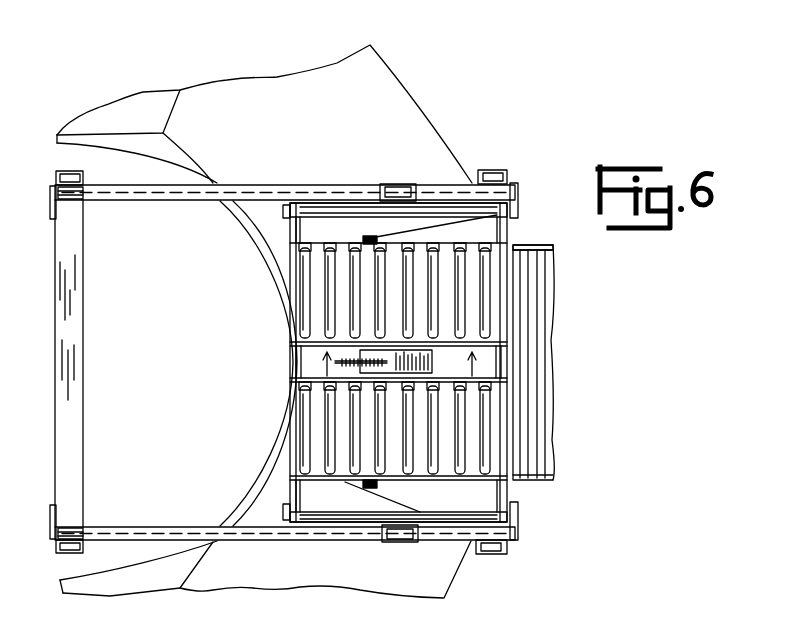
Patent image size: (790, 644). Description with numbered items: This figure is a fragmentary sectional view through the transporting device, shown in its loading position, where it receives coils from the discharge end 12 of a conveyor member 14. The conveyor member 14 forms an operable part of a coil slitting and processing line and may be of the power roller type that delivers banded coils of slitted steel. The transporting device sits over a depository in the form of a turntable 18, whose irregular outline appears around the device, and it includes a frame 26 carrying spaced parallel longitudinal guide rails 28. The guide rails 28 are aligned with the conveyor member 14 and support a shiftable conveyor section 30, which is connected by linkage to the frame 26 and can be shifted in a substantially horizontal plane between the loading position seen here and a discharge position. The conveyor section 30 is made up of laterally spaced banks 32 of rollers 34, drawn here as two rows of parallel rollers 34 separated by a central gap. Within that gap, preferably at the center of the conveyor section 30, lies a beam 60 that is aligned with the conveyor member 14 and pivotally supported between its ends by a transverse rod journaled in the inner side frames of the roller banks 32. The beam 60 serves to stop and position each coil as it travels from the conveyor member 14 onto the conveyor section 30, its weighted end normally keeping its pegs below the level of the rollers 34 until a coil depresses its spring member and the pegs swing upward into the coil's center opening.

The discharge end 12 is at (530, 242).
The conveyor member 14 is at (565, 374).
The turntable 18 is at (403, 95).
The frame 26 is at (45, 232).
The longitudinal guide rails 28 is at (120, 200).
The conveyor section 30 is at (281, 366).
The banks of rollers 32 is at (295, 302).
The rollers 34 is at (306, 277).
The beam 60 is at (436, 360).